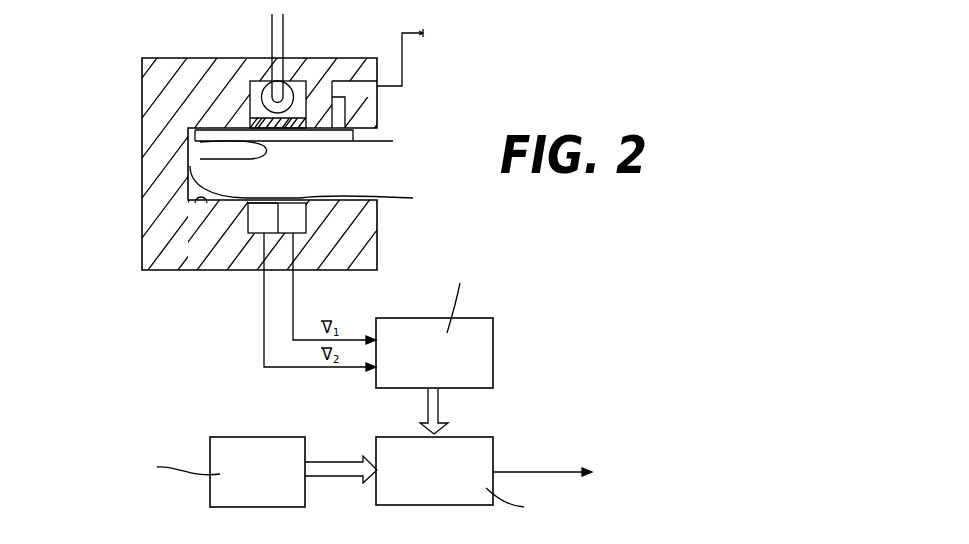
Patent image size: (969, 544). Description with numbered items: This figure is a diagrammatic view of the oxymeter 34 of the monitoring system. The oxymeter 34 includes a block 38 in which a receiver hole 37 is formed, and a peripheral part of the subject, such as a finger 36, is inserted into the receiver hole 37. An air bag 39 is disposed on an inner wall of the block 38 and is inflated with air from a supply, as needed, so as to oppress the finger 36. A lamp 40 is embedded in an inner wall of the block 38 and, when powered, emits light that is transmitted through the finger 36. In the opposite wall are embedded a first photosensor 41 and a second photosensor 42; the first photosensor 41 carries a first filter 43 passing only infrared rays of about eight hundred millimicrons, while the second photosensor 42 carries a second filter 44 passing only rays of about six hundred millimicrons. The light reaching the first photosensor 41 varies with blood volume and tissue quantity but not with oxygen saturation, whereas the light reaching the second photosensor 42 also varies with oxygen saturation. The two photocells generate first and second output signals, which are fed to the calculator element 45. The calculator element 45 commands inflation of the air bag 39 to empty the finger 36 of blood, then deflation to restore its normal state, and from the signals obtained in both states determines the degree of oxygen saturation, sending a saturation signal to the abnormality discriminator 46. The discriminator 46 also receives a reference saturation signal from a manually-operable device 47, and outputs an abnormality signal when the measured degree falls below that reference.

The oxymeter 34 is at (140, 44).
The finger 36 is at (378, 150).
The receiver hole 37 is at (195, 203).
The block 38 is at (187, 66).
The air bag 39 is at (198, 134).
The lamp 40 is at (284, 92).
The first photosensor 41 is at (296, 228).
The second photosensor 42 is at (258, 228).
The first filter 43 is at (306, 203).
The second filter 44 is at (248, 203).
The calculator element 45 is at (488, 333).
The abnormality discriminator 46 is at (486, 449).
The manually-operable device 47 is at (220, 443).